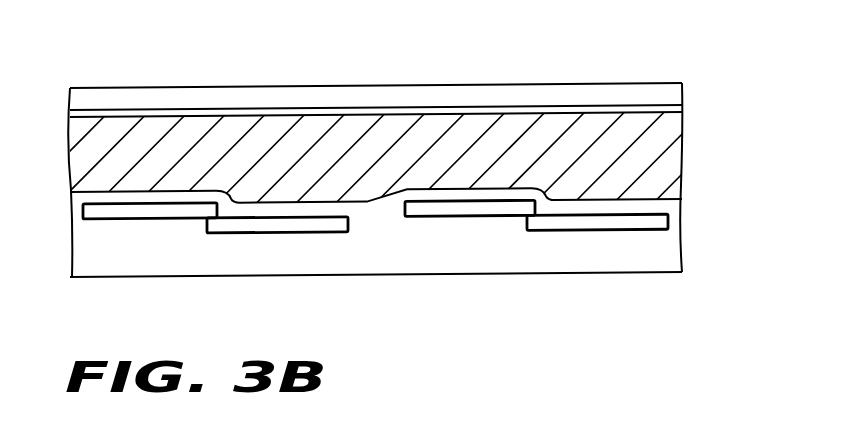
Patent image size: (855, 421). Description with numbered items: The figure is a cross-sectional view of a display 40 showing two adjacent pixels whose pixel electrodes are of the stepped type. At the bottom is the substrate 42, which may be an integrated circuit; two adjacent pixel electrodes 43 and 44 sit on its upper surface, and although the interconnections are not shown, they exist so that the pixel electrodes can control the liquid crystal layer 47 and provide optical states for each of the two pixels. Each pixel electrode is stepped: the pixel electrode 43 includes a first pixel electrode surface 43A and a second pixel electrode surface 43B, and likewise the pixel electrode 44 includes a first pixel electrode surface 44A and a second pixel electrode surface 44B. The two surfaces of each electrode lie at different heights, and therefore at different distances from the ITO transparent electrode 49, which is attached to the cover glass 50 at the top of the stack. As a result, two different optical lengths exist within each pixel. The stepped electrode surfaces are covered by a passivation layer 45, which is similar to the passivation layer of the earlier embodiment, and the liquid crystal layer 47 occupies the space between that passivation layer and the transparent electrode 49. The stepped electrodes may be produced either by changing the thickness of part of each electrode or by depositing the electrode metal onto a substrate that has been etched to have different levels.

The display 40 is at (712, 40).
The substrate 42 is at (632, 263).
The pixel electrode 43 is at (215, 178).
The first pixel electrode surface 43A is at (155, 203).
The second pixel electrode surface 43B is at (291, 217).
The pixel electrode 44 is at (536, 177).
The first pixel electrode surface 44A is at (472, 203).
The second pixel electrode surface 44B is at (613, 205).
The passivation layer 45 is at (640, 205).
The liquid crystal layer 47 is at (77, 148).
The ITO transparent electrode 49 is at (683, 105).
The cover glass 50 is at (77, 99).